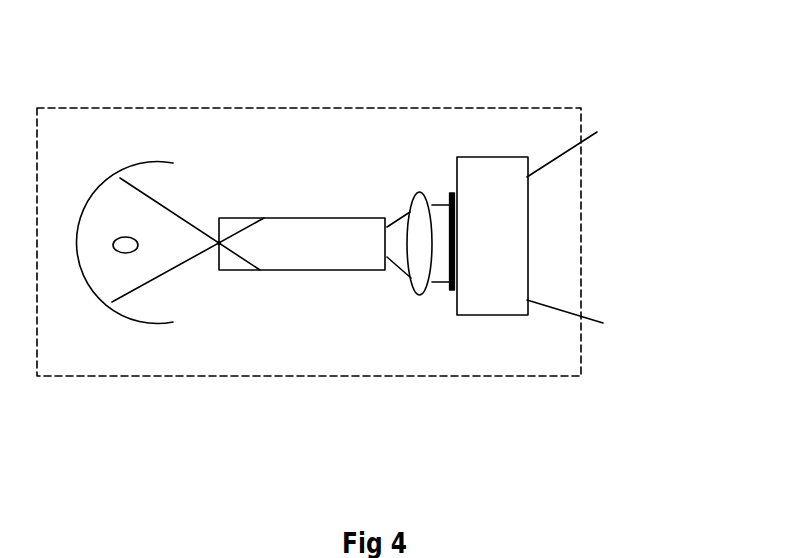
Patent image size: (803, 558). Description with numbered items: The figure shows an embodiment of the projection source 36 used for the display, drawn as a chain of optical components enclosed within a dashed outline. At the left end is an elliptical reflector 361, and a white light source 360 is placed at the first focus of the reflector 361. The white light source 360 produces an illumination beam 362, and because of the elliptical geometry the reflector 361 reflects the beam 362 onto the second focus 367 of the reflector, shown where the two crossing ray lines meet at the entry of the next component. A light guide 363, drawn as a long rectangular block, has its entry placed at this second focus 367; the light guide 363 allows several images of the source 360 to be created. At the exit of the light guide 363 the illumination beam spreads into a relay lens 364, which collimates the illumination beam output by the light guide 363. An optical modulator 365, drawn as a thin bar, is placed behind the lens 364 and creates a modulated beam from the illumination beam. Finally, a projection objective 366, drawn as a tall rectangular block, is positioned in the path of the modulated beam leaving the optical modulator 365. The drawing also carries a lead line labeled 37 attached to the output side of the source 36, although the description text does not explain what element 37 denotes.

The projection source 36 is at (575, 338).
The circuit board 37 is at (592, 133).
The white light source 360 is at (126, 237).
The elliptical reflector 361 is at (143, 320).
The illumination beam 362 is at (183, 223).
The light guide 363 is at (298, 218).
The relay lens 364 is at (420, 295).
The optical modulator 365 is at (452, 292).
The projection objective 366 is at (500, 195).
The second focus 367 is at (218, 250).